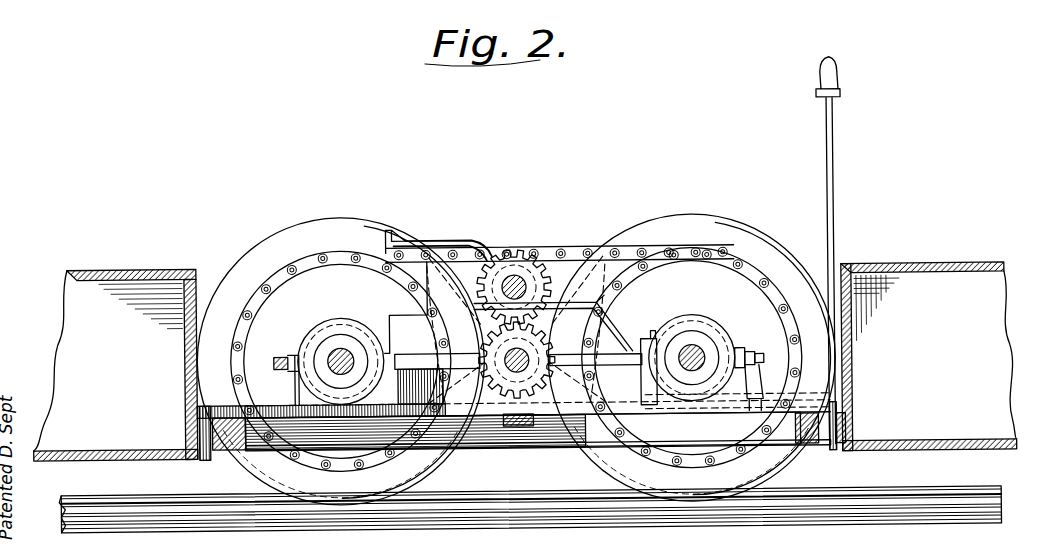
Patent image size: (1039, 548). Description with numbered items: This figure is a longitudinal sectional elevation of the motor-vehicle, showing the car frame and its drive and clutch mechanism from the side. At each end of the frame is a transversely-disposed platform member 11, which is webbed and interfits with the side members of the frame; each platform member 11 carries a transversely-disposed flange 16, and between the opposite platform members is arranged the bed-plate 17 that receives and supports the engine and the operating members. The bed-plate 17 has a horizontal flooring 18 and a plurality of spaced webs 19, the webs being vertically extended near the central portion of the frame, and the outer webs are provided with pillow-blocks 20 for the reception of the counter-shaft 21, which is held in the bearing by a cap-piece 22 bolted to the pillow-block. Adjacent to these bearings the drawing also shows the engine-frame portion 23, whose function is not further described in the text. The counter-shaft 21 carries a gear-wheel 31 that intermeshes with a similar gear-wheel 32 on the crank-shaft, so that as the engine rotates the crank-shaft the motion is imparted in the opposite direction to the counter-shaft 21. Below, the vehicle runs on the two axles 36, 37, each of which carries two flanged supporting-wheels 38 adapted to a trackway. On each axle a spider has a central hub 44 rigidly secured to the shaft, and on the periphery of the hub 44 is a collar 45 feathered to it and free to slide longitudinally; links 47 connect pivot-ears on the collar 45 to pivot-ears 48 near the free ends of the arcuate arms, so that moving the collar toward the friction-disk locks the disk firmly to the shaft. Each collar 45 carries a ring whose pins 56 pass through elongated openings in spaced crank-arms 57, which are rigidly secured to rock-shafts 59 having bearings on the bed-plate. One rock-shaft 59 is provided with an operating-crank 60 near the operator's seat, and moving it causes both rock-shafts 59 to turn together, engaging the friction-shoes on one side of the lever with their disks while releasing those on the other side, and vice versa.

The platform member 11 is at (524, 361).
The transversely-disposed flange 16 is at (201, 456).
The bed-plate 17 is at (537, 448).
The horizontal flooring 18 is at (490, 430).
The spaced webs 19 is at (522, 431).
The pillow-block 20 is at (540, 386).
The counter-shaft 21 is at (486, 350).
The cap-piece 22 is at (595, 344).
The motor bracket 23 is at (512, 291).
The gear-wheel 31 is at (515, 428).
The gear-wheel 32 is at (520, 258).
The axle 36 is at (697, 352).
The axle 37 is at (338, 350).
The flanged supporting-wheel 38 is at (345, 227).
The central hub 44 is at (740, 349).
The collar 45 is at (678, 328).
The link 47 is at (295, 385).
The pivot-ear 48 is at (750, 354).
The pin 56 is at (762, 356).
The crank-arm 57 is at (757, 375).
The rock-shaft 59 is at (641, 395).
The operating-crank 60 is at (836, 185).